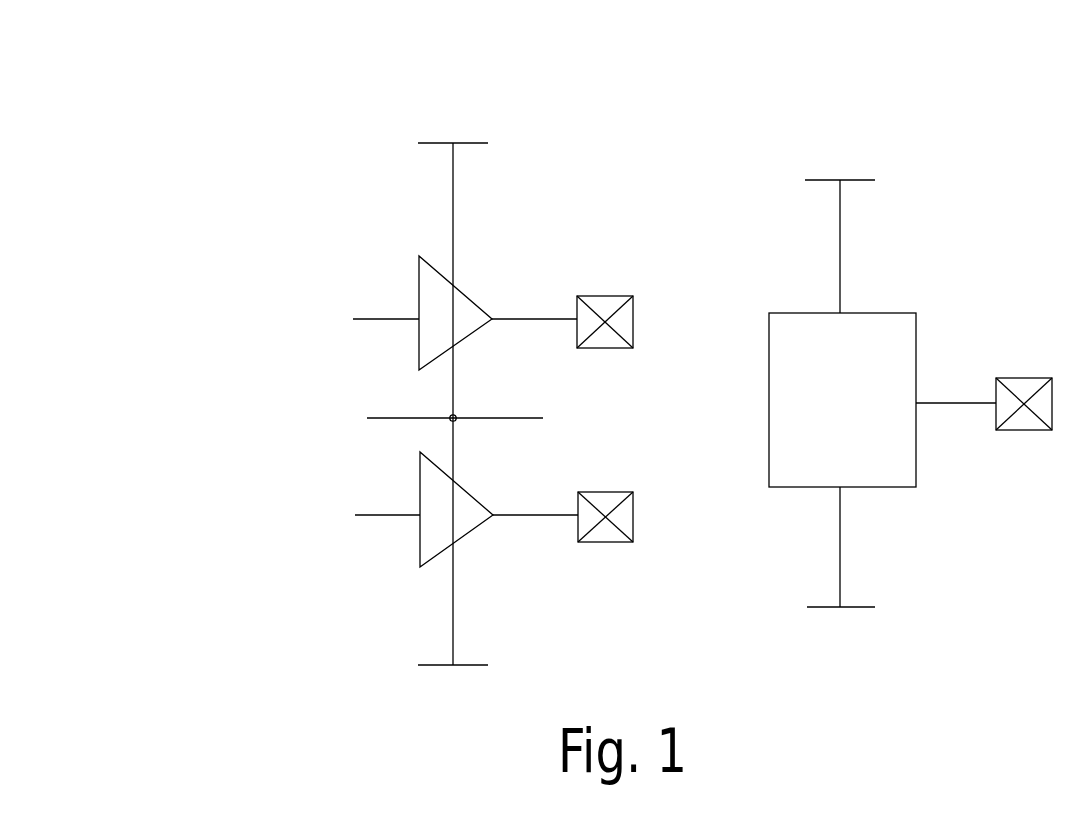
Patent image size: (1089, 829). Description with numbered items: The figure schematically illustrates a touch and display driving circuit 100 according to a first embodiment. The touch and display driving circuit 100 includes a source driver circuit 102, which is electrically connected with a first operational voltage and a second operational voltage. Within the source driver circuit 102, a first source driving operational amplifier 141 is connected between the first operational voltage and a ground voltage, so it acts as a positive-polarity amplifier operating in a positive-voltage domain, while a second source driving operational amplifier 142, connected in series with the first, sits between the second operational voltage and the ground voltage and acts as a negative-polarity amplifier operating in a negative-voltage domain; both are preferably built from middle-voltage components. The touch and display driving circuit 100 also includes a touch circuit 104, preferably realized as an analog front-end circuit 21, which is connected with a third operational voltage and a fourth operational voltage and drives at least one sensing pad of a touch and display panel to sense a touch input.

The touch and display driving circuit 100 is at (223, 308).
The source driver circuit 102 is at (517, 165).
The touch circuit 104 is at (910, 128).
The first source driving operational amplifier 141 is at (470, 333).
The second source driving operational amplifier 142 is at (470, 528).
The analog front-end circuit 21 is at (868, 430).